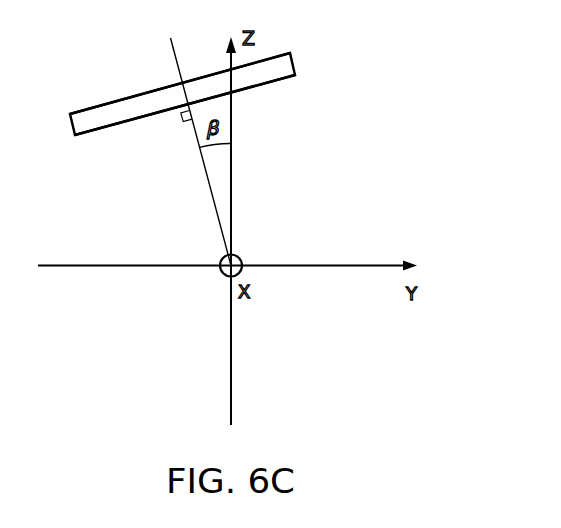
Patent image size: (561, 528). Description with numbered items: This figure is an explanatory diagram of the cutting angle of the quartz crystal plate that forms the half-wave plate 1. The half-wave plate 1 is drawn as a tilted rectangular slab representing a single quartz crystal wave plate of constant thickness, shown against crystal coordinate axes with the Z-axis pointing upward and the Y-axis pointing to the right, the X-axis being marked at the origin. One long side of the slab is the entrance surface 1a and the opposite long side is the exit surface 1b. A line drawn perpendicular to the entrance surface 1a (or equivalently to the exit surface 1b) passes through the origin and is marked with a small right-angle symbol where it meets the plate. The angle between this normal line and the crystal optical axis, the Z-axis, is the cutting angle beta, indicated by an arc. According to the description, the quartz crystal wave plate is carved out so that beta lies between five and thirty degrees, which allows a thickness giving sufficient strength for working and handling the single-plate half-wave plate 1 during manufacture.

The half-wave plate 1 is at (100, 107).
The entrance surface 1a is at (128, 122).
The exit surface 1b is at (148, 92).